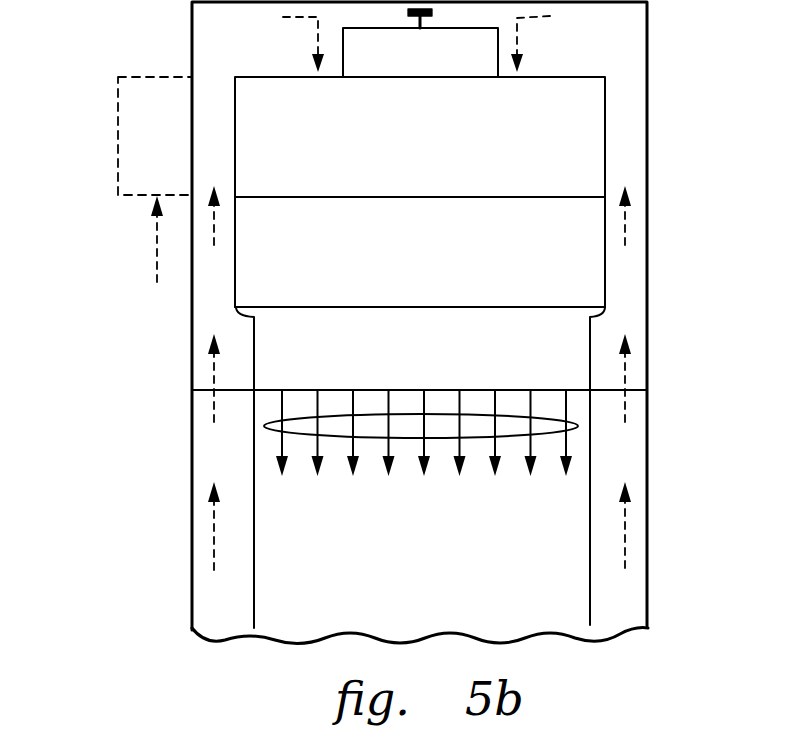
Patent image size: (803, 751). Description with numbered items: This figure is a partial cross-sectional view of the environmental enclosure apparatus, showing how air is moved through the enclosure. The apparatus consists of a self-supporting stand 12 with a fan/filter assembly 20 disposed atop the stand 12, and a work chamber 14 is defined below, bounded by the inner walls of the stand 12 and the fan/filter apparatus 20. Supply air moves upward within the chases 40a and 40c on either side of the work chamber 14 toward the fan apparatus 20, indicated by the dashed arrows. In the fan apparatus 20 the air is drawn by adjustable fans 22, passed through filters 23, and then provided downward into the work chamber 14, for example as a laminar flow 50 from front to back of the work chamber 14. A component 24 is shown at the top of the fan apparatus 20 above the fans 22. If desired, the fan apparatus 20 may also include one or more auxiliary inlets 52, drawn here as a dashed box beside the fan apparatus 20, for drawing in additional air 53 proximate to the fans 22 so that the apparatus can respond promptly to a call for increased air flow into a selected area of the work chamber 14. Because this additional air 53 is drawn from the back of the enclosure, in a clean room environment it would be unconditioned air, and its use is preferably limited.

The self-supporting stand 12 is at (651, 460).
The work chamber 14 is at (441, 574).
The fan/filter assembly 20 is at (651, 125).
The adjustable fans 22 is at (441, 154).
The filters 23 is at (441, 272).
The electrode terminal 24 is at (441, 66).
The chase 40a is at (645, 612).
The chase 40c is at (245, 616).
The laminar flow 50 is at (374, 452).
The auxiliary inlet 52 is at (152, 62).
The additional air 53 is at (157, 242).